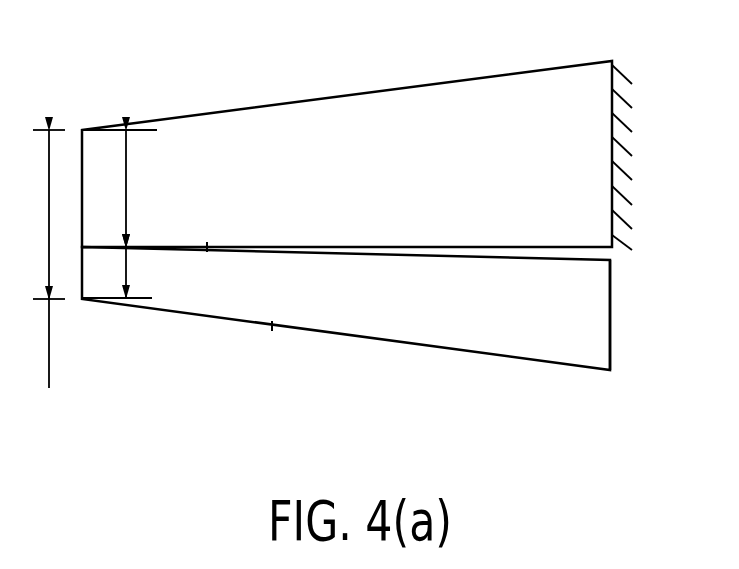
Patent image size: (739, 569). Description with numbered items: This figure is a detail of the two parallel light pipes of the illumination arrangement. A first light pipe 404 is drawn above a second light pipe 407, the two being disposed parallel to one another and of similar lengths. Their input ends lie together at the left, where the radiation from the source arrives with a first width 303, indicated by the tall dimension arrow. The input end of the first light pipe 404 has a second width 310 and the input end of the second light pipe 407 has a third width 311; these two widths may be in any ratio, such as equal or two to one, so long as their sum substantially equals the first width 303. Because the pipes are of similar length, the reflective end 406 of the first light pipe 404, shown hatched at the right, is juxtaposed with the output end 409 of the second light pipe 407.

The first width 303 is at (46, 277).
The second width 310 is at (119, 188).
The third width 311 is at (128, 275).
The first light pipe 404 is at (395, 89).
The reflective end 406 is at (613, 155).
The second light pipe 407 is at (340, 335).
The output end 409 is at (610, 305).